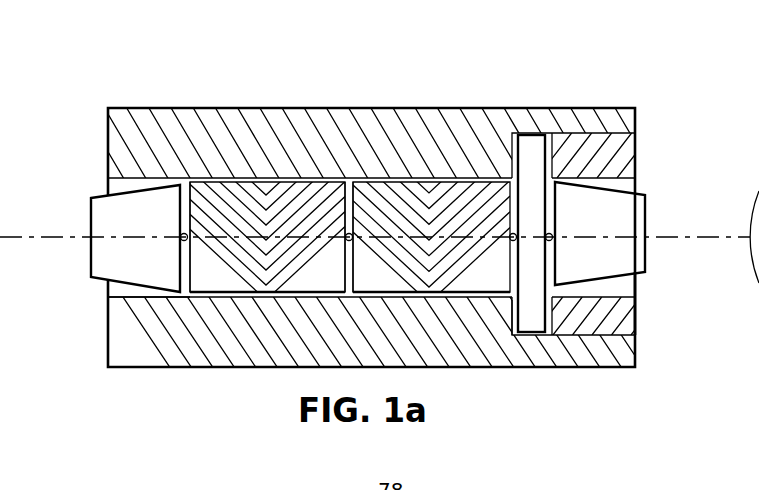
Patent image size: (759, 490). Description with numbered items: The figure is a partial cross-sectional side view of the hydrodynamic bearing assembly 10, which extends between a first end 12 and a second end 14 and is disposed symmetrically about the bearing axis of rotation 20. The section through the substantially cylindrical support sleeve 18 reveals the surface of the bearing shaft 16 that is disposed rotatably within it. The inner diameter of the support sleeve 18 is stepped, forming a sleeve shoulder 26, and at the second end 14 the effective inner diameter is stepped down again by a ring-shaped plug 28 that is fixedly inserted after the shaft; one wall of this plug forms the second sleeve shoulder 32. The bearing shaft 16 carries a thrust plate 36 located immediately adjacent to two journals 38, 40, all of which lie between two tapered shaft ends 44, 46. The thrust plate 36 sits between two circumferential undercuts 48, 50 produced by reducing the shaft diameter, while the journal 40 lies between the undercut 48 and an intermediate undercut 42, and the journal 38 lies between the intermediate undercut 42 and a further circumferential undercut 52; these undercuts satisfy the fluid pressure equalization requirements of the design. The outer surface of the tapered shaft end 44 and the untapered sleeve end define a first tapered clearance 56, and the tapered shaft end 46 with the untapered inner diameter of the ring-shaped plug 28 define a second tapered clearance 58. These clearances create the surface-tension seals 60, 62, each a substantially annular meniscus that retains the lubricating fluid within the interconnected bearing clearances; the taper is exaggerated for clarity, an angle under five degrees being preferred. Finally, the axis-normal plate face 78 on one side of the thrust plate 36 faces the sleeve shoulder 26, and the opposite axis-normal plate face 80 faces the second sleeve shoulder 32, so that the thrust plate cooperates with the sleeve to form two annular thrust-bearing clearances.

The hydrodynamic bearing assembly 10 is at (42, 96).
The first end 12 is at (87, 356).
The second end 14 is at (700, 377).
The bearing shaft 16 is at (152, 212).
The support sleeve 18 is at (612, 108).
The bearing axis of rotation 20 is at (50, 233).
The sleeve shoulder 26 is at (512, 318).
The ring-shaped plug 28 is at (623, 318).
The second sleeve shoulder 32 is at (555, 306).
The thrust plate 36 is at (530, 153).
The journal 38 is at (289, 216).
The journal 40 is at (417, 226).
The intermediate undercut 42 is at (347, 181).
The tapered shaft end 44 is at (102, 252).
The tapered shaft end 46 is at (598, 217).
The circumferential undercut 48 is at (505, 177).
The circumferential undercut 50 is at (594, 133).
The circumferential undercut 52 is at (185, 182).
The first tapered clearance 56 is at (108, 287).
The second tapered clearance 58 is at (636, 281).
The surface-tension seal 60 is at (157, 298).
The surface-tension seal 62 is at (584, 297).
The axis-normal plate face 78 is at (510, 255).
The axis-normal plate face 80 is at (550, 253).